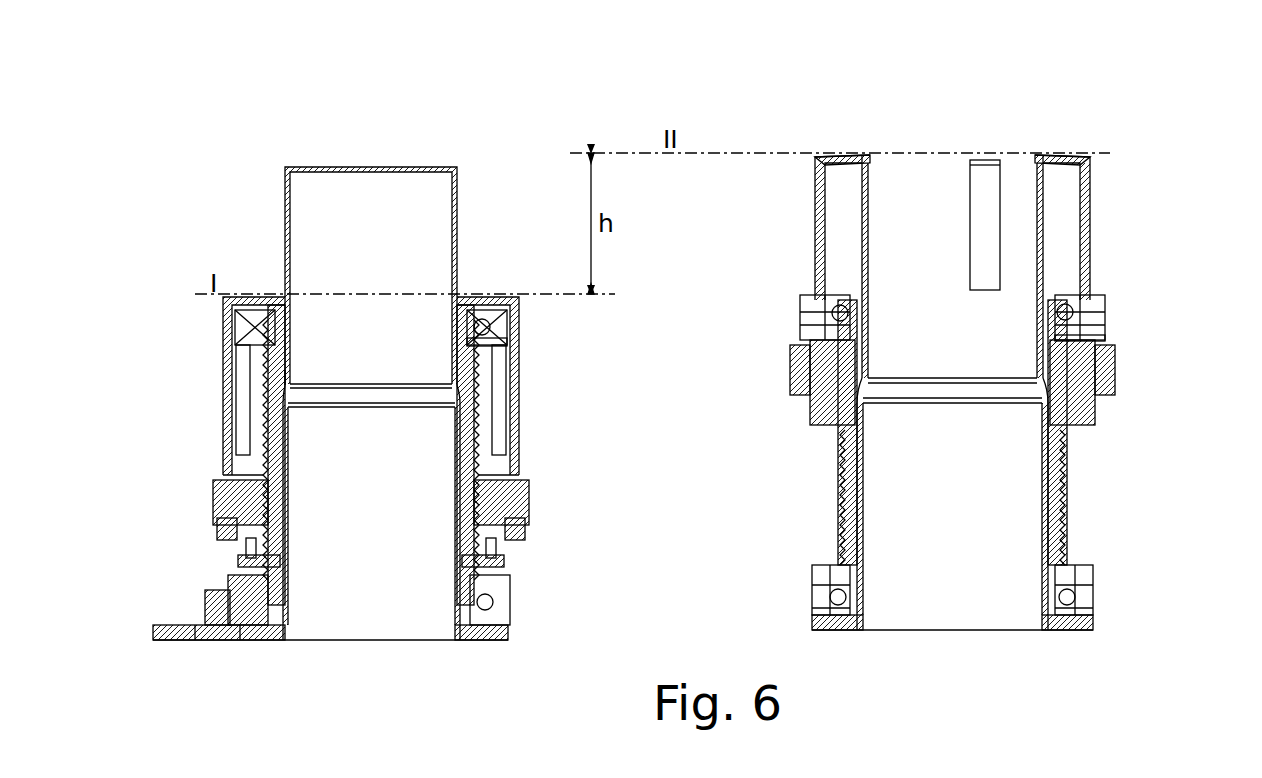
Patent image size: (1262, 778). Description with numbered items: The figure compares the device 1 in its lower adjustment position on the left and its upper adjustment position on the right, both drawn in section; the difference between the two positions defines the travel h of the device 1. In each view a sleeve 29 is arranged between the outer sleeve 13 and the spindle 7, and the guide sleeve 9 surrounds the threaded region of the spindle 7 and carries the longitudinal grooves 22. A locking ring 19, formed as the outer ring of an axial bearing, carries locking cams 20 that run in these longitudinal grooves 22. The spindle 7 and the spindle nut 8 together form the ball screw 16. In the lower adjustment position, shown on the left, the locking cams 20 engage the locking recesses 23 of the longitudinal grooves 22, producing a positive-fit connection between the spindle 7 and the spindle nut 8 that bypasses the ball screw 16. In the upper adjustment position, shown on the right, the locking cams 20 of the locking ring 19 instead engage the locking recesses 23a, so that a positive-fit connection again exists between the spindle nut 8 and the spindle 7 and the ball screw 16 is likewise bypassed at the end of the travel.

The device 1 is at (200, 135).
The sleeve 13 is at (291, 200).
The sleeve 29 is at (284, 292).
The guide sleeve 9 is at (221, 390).
The longitudinal grooves 22 is at (503, 373).
The spindle 7 is at (479, 414).
The locking ring 19 is at (236, 322).
The locking recesses 23 is at (514, 314).
The locking recesses 23a is at (1087, 300).
The locking cams 20 is at (515, 333).
The spindle nut 8 is at (218, 528).
The ball screw 16 is at (541, 498).